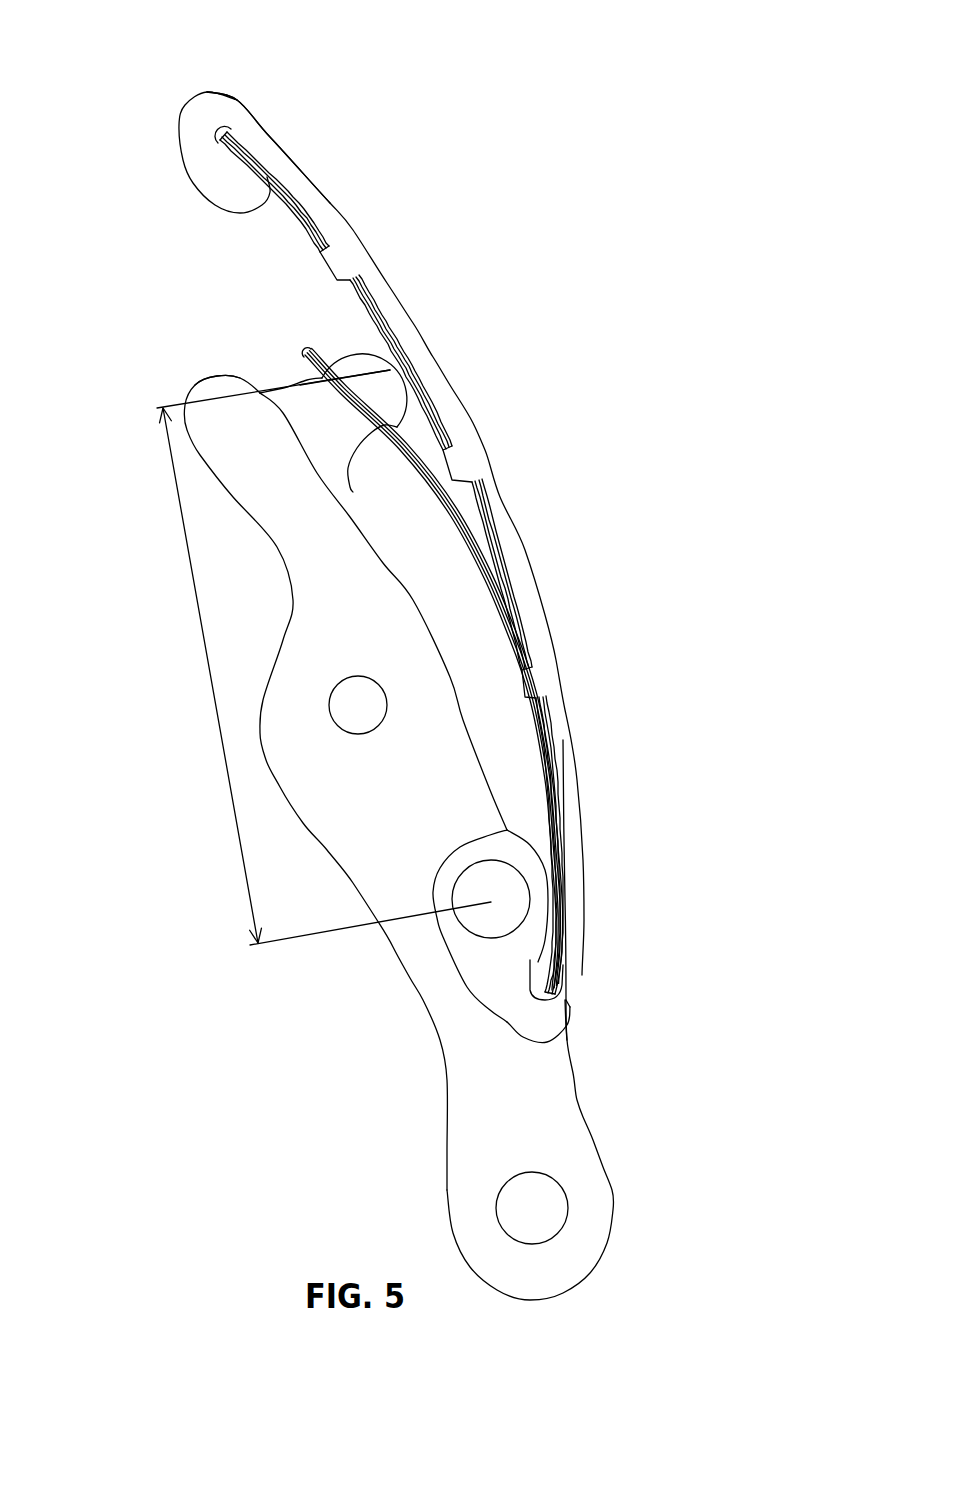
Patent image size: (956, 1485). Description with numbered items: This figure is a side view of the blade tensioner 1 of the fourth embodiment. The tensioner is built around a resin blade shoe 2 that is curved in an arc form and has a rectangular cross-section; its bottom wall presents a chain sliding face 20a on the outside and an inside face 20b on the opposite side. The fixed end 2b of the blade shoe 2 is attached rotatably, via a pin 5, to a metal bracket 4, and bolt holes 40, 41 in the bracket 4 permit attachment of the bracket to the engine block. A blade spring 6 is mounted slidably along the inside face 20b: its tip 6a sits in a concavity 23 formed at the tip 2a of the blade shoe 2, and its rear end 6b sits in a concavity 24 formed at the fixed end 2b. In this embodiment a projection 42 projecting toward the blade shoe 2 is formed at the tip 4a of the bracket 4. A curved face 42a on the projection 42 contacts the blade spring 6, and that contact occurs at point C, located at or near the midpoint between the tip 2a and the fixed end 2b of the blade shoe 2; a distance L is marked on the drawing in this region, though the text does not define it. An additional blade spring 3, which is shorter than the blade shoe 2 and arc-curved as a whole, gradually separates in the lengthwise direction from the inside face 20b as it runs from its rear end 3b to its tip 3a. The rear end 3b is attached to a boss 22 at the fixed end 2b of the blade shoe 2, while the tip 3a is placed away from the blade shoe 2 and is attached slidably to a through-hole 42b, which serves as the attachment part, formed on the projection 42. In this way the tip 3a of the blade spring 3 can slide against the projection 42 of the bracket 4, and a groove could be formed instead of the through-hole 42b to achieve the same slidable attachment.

The blade tensioner 1 is at (530, 433).
The blade shoe 2 is at (530, 553).
The tip of blade shoe 2a is at (203, 100).
The fixed end of blade shoe 2b is at (528, 1028).
The blade spring 3 is at (455, 530).
The tip of blade spring 3a is at (307, 362).
The rear end of blade spring 3b is at (507, 1017).
The bracket 4 is at (412, 995).
The tip of bracket 4a is at (207, 378).
The pin 5 is at (517, 893).
The blade spring 6 is at (300, 222).
The tip of blade spring 6a is at (240, 133).
The rear end of blade spring 6b is at (562, 1006).
The chain sliding face 20a is at (547, 632).
The inside face 20b is at (545, 727).
The boss 22 is at (462, 950).
The concavity 23 is at (228, 152).
The concavity 24 is at (567, 1023).
The bolt hole 40 is at (356, 682).
The bolt hole 41 is at (562, 1198).
The projection 42 is at (347, 357).
The curved face 42a is at (368, 350).
The through-hole 42b is at (383, 418).
The distance between pivot centers L is at (324, 657).
The point C is at (392, 371).